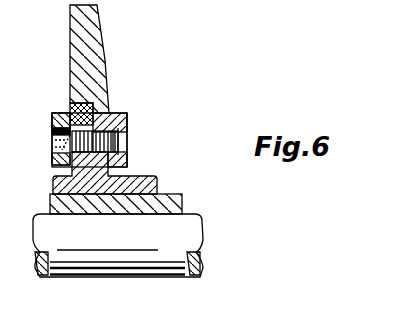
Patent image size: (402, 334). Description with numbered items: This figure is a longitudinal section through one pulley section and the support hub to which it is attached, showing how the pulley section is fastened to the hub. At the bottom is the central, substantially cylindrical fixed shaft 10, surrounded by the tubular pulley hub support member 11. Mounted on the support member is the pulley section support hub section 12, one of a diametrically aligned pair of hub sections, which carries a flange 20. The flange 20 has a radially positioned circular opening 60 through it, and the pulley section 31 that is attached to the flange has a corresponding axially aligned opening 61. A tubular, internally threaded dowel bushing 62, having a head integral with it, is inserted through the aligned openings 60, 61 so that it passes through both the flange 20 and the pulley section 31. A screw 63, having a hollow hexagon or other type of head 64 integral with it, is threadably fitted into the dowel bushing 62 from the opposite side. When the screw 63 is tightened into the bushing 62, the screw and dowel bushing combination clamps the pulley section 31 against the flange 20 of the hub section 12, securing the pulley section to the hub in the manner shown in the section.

The central fixed shaft 10 is at (85, 270).
The tubular pulley hub support member 11 is at (166, 202).
The pulley section support hub section 12 is at (144, 175).
The flange 20 is at (72, 107).
The pulley section 31 is at (95, 33).
The circular opening 60 is at (70, 113).
The axially aligned opening 61 is at (109, 112).
The dowel bushing 62 is at (129, 112).
The screw 63 is at (120, 143).
The head 64 is at (52, 164).